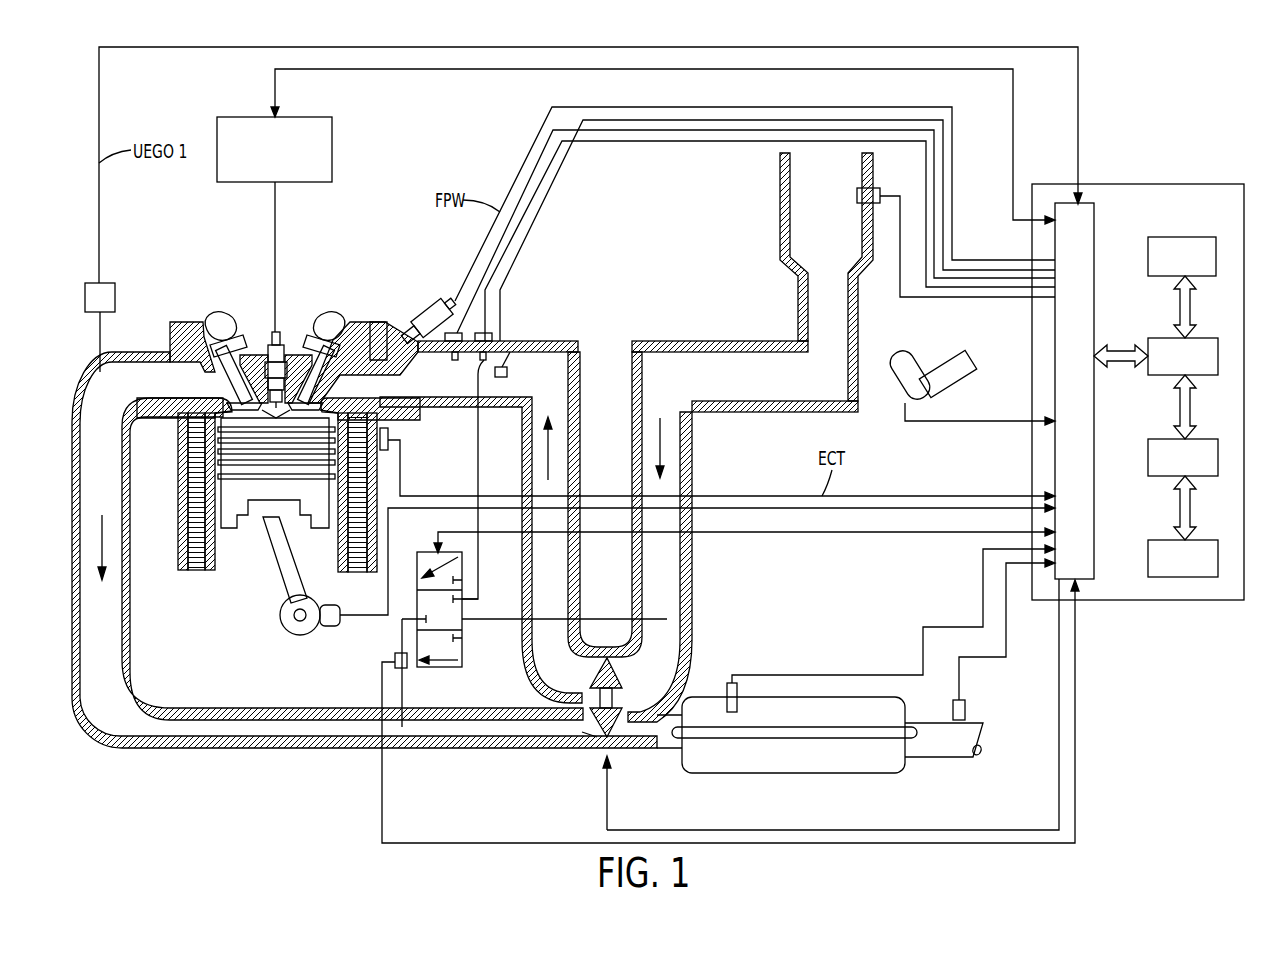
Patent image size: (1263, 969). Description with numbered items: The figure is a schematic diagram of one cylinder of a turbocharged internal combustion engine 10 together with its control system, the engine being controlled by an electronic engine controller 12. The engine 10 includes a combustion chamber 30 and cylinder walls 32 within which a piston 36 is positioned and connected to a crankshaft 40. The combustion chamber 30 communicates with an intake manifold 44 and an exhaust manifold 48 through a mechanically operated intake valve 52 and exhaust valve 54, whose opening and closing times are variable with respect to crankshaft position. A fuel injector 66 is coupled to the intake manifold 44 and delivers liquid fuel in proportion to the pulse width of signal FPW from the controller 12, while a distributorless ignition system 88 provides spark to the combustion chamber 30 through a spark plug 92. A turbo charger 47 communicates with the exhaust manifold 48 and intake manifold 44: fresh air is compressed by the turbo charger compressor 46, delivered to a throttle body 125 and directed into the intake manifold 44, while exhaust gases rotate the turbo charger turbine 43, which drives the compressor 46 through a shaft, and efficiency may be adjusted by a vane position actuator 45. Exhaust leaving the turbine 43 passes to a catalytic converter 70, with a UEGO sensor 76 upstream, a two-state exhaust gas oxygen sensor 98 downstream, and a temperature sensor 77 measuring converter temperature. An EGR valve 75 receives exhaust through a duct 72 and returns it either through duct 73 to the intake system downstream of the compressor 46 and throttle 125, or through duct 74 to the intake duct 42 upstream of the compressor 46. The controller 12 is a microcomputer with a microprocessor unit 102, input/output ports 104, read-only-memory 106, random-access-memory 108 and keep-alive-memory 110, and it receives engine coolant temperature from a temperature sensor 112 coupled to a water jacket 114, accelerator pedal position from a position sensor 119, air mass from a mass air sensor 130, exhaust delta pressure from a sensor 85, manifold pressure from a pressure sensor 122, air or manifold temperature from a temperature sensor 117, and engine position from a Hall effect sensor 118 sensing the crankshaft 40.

The internal combustion engine 10 is at (170, 314).
The electronic engine controller 12 is at (1133, 183).
The combustion chamber 30 is at (198, 452).
The cylinder walls 32 is at (216, 562).
The piston 36 is at (265, 500).
The crankshaft 40 is at (301, 634).
The intake duct 42 is at (748, 385).
The turbo charger turbine 43 is at (611, 737).
The intake manifold 44 is at (400, 378).
The vane position actuator 45 is at (597, 736).
The turbo charger compressor 46 is at (594, 672).
The turbo charger 47 is at (582, 697).
The exhaust manifold 48 is at (98, 413).
The intake valve 52 is at (327, 395).
The exhaust valve 54 is at (224, 395).
The fuel injector 66 is at (415, 299).
The catalytic converter 70 is at (790, 774).
The duct 72 is at (404, 702).
The duct 73 is at (480, 583).
The duct 74 is at (490, 622).
The EGR valve 75 is at (436, 548).
The Universal Exhaust Gas Oxygen sensor 76 is at (110, 281).
The temperature sensor 77 is at (728, 683).
The sensor 85 is at (395, 660).
The distributorless ignition system 88 is at (332, 147).
The spark plug 92 is at (278, 322).
The two-state exhaust gas oxygen sensor 98 is at (982, 707).
The microprocessor unit 102 is at (1210, 338).
The input/output ports 104 is at (1096, 231).
The read-only-memory 106 is at (1210, 237).
The random-access-memory 108 is at (1210, 439).
The keep-alive-memory 110 is at (1210, 540).
The temperature sensor 112 is at (388, 435).
The water jacket 114 is at (190, 576).
The temperature sensor 117 is at (453, 361).
The Hall effect sensor 118 is at (330, 632).
The position sensor 119 is at (937, 364).
The pressure sensor 122 is at (486, 361).
The throttle body 125 is at (508, 374).
The mass air sensor 130 is at (857, 195).